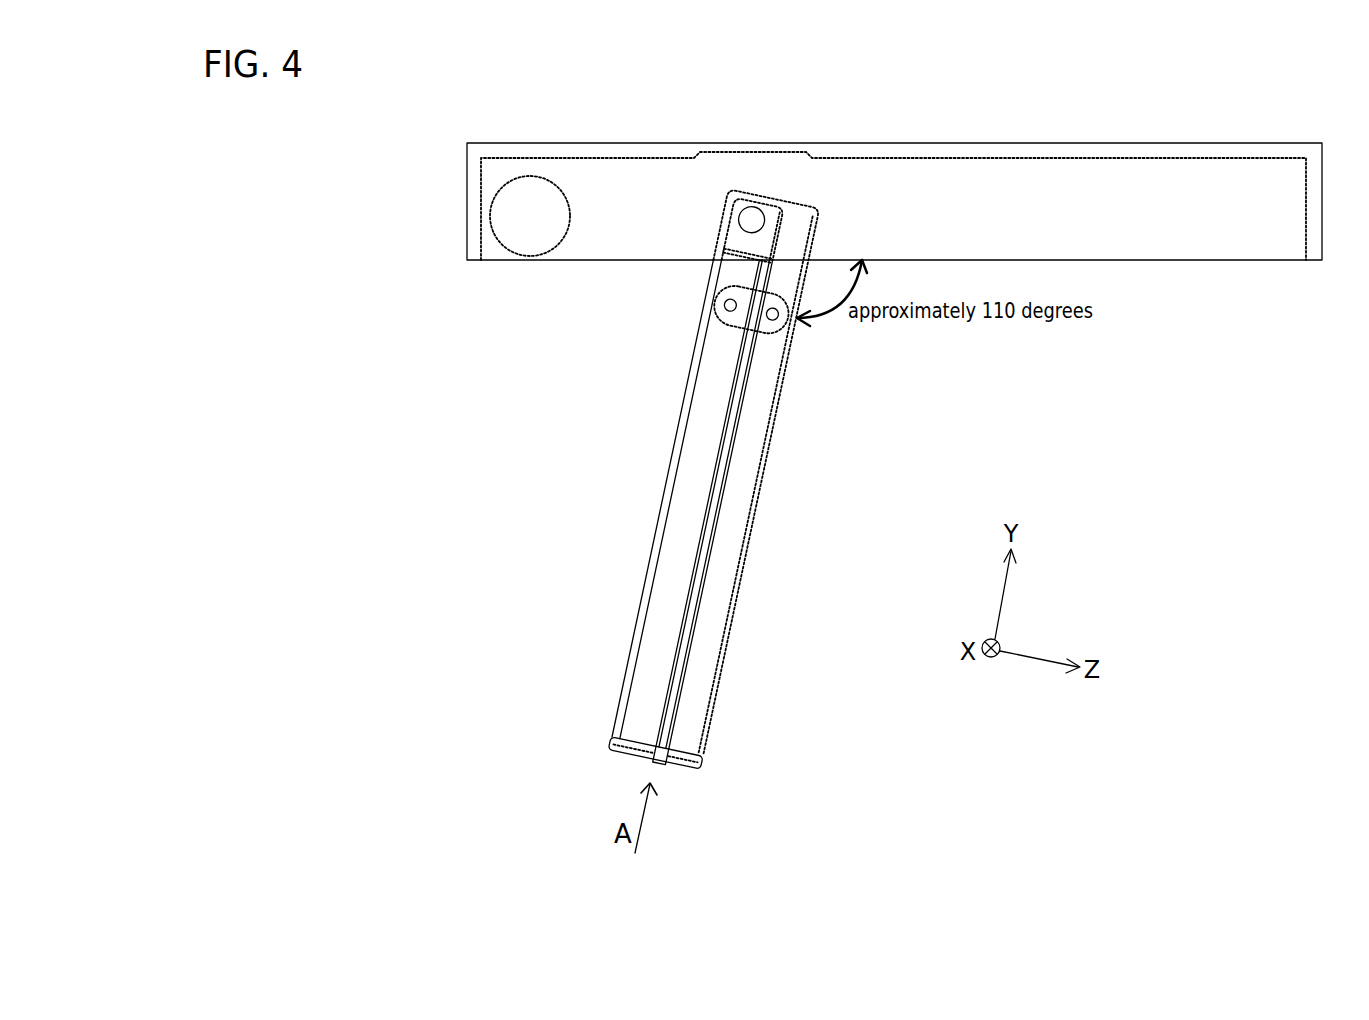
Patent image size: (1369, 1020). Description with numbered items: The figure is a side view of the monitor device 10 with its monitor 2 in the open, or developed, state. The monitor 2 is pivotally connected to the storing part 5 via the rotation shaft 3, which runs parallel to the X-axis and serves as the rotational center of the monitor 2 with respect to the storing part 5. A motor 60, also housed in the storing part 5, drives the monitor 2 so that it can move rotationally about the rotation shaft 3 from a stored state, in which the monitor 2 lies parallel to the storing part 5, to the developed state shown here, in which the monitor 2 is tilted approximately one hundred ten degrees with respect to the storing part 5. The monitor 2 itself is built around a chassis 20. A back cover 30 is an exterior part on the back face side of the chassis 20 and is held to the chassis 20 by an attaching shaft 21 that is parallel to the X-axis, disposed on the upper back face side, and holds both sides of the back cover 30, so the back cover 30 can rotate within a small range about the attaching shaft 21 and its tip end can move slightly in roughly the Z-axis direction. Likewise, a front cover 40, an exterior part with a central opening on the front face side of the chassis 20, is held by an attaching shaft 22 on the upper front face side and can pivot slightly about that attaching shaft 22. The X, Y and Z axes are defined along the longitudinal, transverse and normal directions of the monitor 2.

The monitor device 10 is at (511, 109).
The storing part 5 is at (1143, 145).
The rotation shaft 3 is at (752, 218).
The motor 60 is at (527, 232).
The attaching shaft 21 is at (730, 305).
The attaching shaft 22 is at (778, 314).
The back cover 30 is at (660, 568).
The front cover 40 is at (738, 512).
The chassis 20 is at (688, 627).
The monitor 2 is at (747, 713).